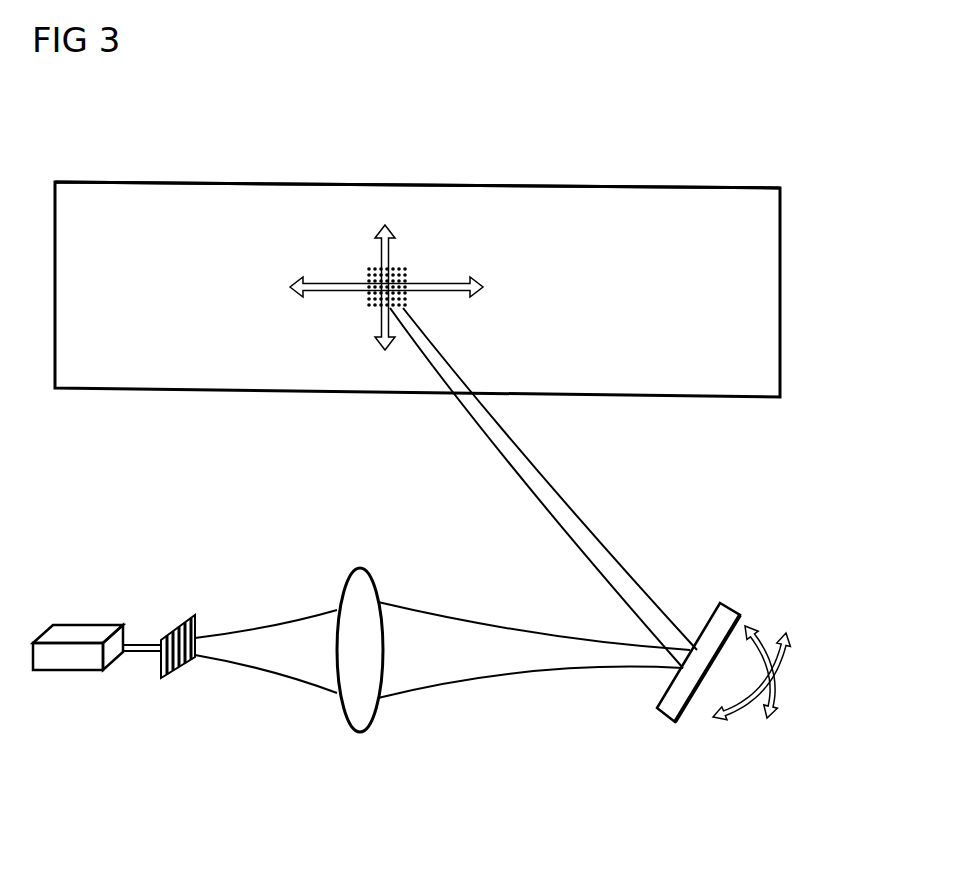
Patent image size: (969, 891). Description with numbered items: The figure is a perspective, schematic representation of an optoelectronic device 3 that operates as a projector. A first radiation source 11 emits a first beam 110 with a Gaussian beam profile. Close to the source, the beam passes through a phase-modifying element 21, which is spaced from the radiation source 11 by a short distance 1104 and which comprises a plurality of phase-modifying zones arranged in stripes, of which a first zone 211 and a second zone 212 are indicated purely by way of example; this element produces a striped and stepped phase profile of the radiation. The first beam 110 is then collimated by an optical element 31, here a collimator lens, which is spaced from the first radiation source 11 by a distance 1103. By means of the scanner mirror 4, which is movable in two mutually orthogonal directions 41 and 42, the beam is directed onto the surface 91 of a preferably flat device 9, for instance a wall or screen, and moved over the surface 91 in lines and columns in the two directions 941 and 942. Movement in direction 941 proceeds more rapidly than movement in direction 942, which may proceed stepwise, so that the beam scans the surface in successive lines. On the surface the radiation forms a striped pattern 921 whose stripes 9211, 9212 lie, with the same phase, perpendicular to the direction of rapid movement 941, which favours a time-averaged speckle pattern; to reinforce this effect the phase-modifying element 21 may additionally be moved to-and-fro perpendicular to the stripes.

The optoelectronic device 3 is at (181, 164).
The flat device 9 is at (667, 398).
The surface 91 is at (662, 198).
The speckle pattern 921 is at (407, 275).
The stripe 9211 is at (370, 277).
The stripe 9212 is at (372, 266).
The direction of rapid movement 941 is at (334, 293).
The direction of slow movement 942 is at (390, 249).
The first radiation source 11 is at (78, 635).
The light beam 1104 is at (195, 582).
The distance 1103 is at (128, 540).
The first beam 110 is at (295, 660).
The phase-modifying element 21 is at (163, 670).
The first zone 211 is at (196, 622).
The second zone 212 is at (190, 667).
The optical element 31 is at (362, 572).
The scanner mirror 4 is at (727, 618).
The direction 41 is at (782, 667).
The direction 42 is at (772, 712).